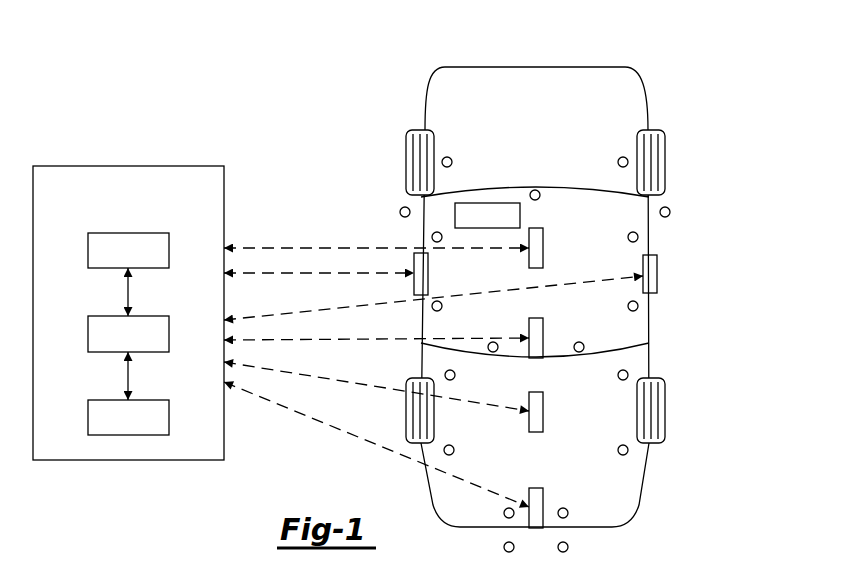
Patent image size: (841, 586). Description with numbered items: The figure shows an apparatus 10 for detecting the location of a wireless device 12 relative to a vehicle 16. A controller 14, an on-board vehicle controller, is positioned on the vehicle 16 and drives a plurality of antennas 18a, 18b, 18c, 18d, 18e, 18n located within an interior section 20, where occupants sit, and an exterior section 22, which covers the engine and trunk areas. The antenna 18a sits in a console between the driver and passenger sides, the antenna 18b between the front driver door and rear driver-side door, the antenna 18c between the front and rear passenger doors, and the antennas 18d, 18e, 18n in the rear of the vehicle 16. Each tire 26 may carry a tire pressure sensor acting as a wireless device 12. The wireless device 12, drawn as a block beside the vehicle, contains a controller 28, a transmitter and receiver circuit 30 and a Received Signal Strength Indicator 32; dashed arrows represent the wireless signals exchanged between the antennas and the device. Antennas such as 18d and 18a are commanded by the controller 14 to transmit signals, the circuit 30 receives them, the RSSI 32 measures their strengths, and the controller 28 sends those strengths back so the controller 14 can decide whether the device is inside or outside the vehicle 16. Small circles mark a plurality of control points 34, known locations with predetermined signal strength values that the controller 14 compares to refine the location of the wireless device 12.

The apparatus 10 is at (622, 31).
The wireless device 12 is at (128, 166).
The controller 14 is at (488, 203).
The vehicle 16 is at (535, 67).
The antenna 18a is at (543, 260).
The antenna 18b is at (428, 280).
The antenna 18c is at (657, 275).
The antenna 18d is at (543, 348).
The antenna 18e is at (543, 400).
The antenna 18n is at (543, 492).
The interior section 20 is at (570, 220).
The exterior section 22 is at (547, 110).
The tire 26 is at (406, 162).
The controller 28 is at (88, 250).
The transmitter and receiver circuit 30 is at (88, 417).
The Received Signal Strength Indicator 32 is at (88, 334).
The control points 34 is at (447, 157).